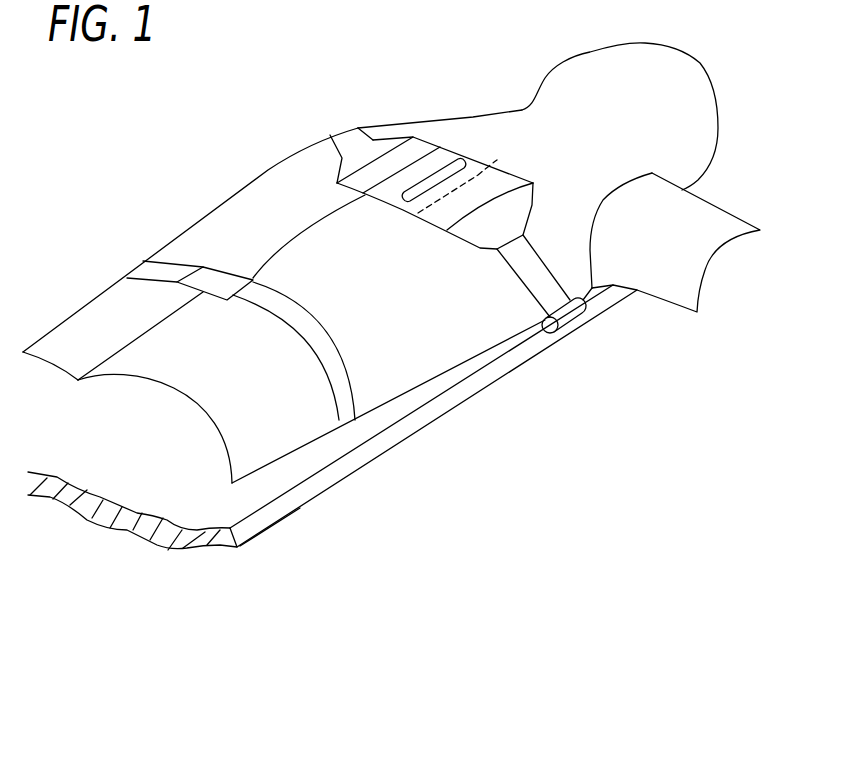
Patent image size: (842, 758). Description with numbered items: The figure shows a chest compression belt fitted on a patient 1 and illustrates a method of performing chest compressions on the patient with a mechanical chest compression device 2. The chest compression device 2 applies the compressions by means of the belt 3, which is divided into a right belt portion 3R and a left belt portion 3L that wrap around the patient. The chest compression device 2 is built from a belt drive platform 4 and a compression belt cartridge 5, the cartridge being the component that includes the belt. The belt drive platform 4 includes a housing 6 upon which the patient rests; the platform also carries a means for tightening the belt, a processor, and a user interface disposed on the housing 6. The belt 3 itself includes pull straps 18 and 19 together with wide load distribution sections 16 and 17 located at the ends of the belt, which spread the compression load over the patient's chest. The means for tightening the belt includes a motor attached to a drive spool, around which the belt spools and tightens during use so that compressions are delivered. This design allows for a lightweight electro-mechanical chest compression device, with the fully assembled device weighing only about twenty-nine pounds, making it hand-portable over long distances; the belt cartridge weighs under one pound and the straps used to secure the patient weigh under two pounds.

The patient 1 is at (717, 90).
The chest compression device 2 is at (620, 352).
The belt 3 is at (402, 205).
The right belt portion 3R is at (322, 172).
The left belt portion 3L is at (487, 260).
The belt drive platform 4 is at (437, 428).
The compression belt cartridge 5 is at (447, 163).
The housing 6 is at (493, 383).
The wide load distribution section 16 is at (436, 124).
The wide load distribution section 17 is at (513, 157).
The pull strap 18 is at (370, 138).
The pull strap 19 is at (556, 252).